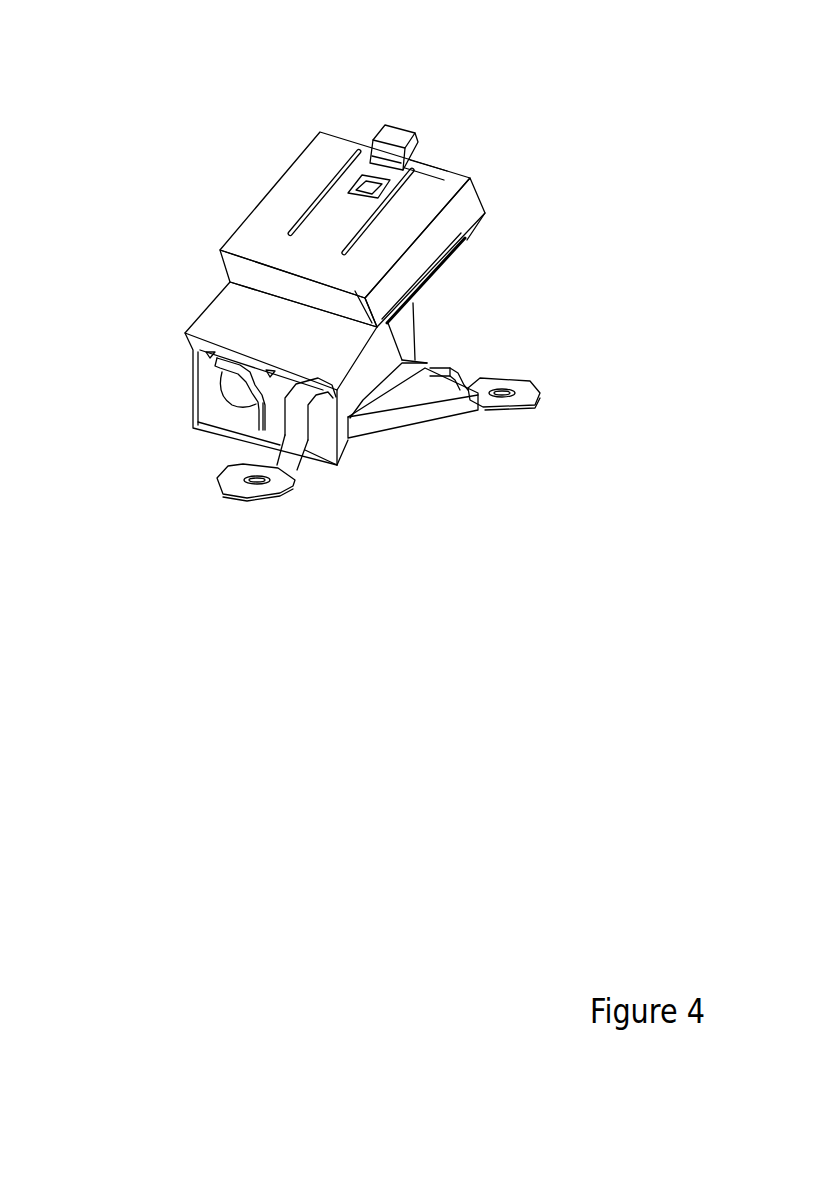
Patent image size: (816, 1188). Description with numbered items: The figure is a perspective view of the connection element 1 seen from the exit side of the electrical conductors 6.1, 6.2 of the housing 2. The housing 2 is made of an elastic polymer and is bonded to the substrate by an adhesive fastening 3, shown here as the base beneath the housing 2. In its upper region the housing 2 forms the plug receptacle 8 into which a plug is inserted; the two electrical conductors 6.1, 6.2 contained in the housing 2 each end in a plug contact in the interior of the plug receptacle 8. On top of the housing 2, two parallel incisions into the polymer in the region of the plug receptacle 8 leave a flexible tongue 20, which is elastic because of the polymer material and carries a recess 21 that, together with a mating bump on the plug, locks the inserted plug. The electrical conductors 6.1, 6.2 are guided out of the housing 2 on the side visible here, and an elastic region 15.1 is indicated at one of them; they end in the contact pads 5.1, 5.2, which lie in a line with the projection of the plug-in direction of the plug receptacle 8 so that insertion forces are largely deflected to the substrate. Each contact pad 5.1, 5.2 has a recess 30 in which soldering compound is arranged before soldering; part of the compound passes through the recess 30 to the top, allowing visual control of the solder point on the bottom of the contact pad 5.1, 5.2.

The connection element 1 is at (196, 160).
The housing 2 is at (225, 291).
The adhesive fastening 3 is at (400, 450).
The plug receptacle 8 is at (478, 142).
The flexible tongue 20 is at (343, 215).
The recess in the flexible tongue 21 is at (365, 180).
The contact pad 5.1 is at (230, 483).
The contact pad 5.2 is at (537, 388).
The electrical conductor 6.1 is at (300, 432).
The electrical conductor 6.2 is at (453, 370).
The elastic region 15.1 is at (298, 415).
The recess in the contact pad 30 is at (262, 487).